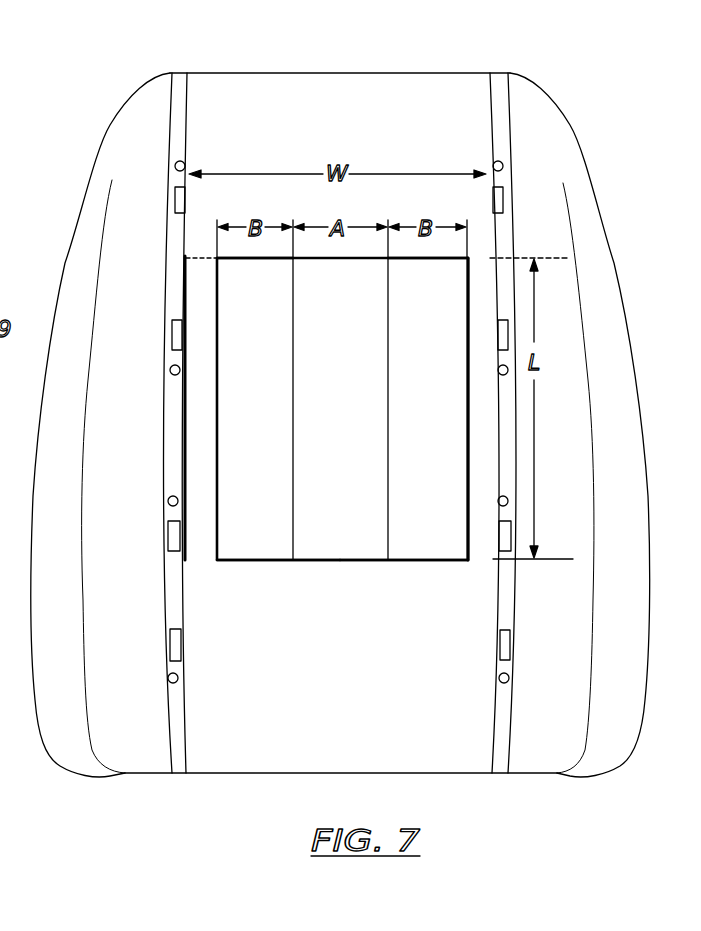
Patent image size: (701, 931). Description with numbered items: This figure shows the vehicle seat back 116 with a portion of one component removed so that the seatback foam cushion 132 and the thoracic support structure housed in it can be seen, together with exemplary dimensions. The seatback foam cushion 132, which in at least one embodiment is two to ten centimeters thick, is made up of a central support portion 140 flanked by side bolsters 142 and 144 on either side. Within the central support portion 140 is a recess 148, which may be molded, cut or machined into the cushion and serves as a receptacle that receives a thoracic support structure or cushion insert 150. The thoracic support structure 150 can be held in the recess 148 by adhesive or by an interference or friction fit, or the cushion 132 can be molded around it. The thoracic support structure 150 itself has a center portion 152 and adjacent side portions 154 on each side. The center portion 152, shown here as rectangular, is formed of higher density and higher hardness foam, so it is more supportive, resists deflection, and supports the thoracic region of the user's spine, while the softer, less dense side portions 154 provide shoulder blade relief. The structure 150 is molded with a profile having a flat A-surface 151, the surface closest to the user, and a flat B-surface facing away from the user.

The seat back 116 is at (227, 95).
The back foam cushion 132 is at (450, 95).
The central support portion 140 is at (367, 699).
The side bolster 142 is at (154, 647).
The side bolster 144 is at (577, 648).
The recess 148 is at (410, 558).
The thoracic support structure 150 is at (228, 472).
The A-surface 151 is at (246, 533).
The center portion 152 is at (362, 312).
The side portions 154 is at (274, 349).